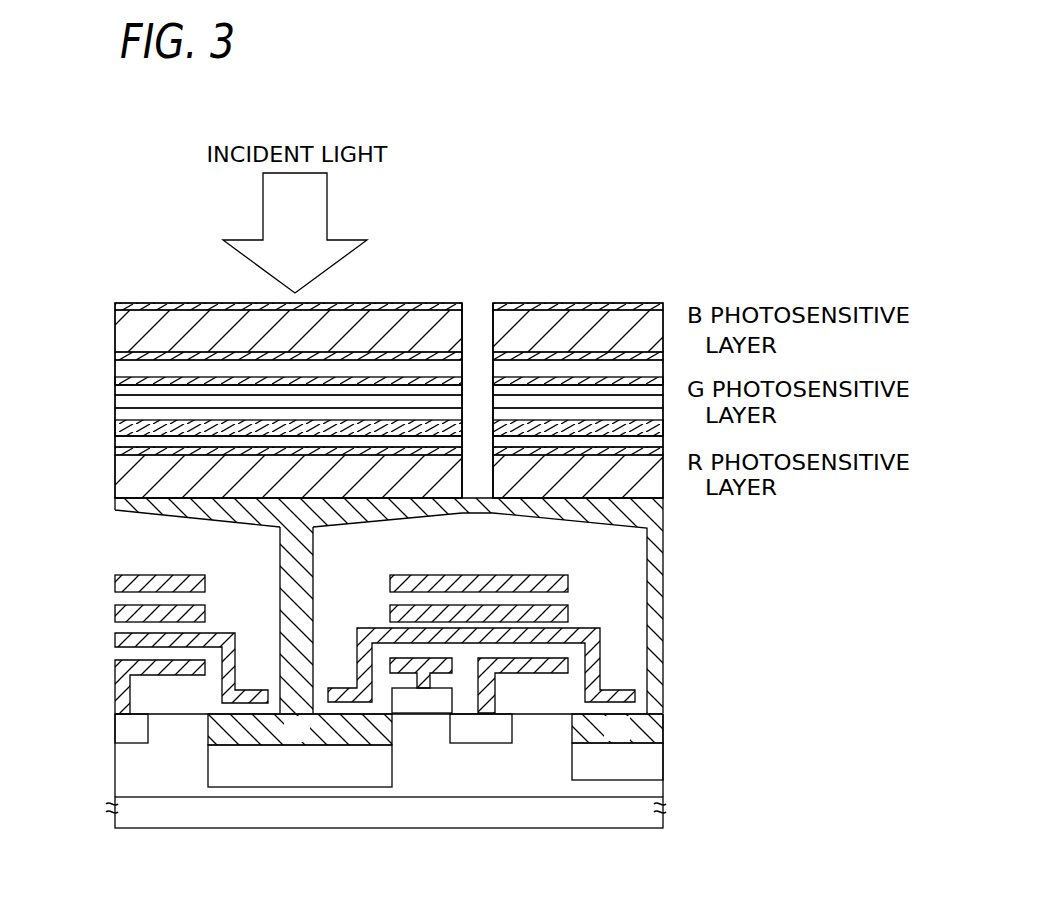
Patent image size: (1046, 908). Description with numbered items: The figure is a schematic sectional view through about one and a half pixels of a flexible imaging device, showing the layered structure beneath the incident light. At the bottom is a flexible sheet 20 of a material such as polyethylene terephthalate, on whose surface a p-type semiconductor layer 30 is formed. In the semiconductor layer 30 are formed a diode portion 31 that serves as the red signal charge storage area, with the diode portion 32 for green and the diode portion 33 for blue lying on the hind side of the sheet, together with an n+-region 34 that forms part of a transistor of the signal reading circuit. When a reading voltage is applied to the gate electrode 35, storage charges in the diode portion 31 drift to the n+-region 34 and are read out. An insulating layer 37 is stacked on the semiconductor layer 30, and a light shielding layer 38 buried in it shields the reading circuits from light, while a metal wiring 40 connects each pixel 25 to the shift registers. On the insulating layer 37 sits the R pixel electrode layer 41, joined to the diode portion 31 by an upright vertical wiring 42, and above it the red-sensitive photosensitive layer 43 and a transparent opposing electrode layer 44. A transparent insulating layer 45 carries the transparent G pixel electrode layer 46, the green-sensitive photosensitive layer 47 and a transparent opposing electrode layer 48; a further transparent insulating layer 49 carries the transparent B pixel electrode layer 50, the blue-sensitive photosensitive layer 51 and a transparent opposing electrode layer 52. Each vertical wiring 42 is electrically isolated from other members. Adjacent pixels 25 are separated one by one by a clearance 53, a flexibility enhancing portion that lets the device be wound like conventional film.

The flexible sheet 20 is at (150, 813).
The pixel 25 is at (400, 297).
The p-type semiconductor layer 30 is at (125, 773).
The diode portion 31 is at (435, 798).
The diode portion 32 is at (435, 729).
The diode portion 33 is at (251, 787).
The n+-region 34 is at (495, 745).
The gate electrode 35 is at (423, 713).
The insulating layer 37 is at (128, 552).
The light shielding layer 38 is at (225, 691).
The metal wiring 40 is at (115, 583).
The R pixel electrode layer 41 is at (148, 515).
The vertical wiring 42 is at (283, 622).
The photosensitive layer 43 is at (113, 490).
The transparent opposing electrode layer 44 is at (113, 455).
The transparent insulating layer 45 is at (113, 443).
The transparent G pixel electrode layer 46 is at (113, 427).
The photosensitive layer 47 is at (113, 408).
The transparent opposing electrode layer 48 is at (113, 395).
The transparent insulating layer 49 is at (113, 380).
The transparent B pixel electrode layer 50 is at (112, 363).
The photosensitive layer 51 is at (155, 322).
The transparent opposing electrode layer 52 is at (214, 303).
The clearance 53 is at (478, 307).